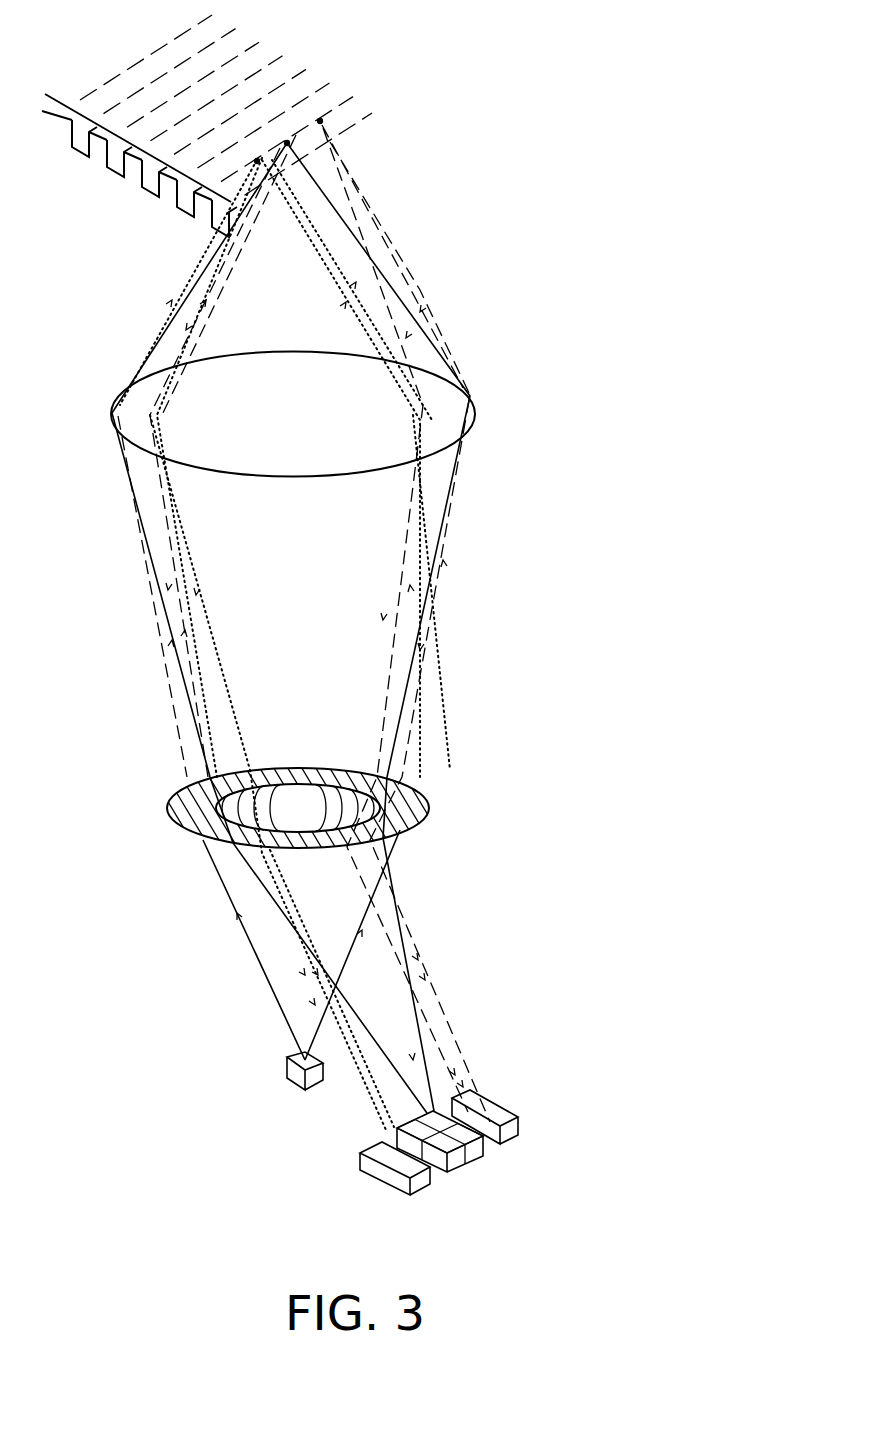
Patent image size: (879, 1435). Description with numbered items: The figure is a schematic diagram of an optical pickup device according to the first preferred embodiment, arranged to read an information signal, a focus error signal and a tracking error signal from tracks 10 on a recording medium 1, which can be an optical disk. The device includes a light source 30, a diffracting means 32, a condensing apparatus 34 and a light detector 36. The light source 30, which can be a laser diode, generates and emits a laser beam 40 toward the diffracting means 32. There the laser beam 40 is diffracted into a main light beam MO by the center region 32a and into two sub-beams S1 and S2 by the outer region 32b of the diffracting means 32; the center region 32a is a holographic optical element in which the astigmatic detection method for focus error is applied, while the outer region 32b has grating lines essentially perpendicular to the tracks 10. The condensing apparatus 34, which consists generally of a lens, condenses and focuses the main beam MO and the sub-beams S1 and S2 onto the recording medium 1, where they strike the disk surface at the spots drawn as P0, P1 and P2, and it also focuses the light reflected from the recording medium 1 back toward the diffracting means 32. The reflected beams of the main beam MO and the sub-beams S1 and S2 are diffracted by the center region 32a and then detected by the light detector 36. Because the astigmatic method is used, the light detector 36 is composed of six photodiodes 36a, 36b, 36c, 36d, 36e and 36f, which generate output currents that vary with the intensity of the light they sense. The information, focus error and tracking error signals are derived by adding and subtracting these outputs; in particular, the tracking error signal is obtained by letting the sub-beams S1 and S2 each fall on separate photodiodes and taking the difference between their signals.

The recording medium 1 is at (104, 163).
The tracks 10 is at (158, 175).
The main beam spot P0 is at (289, 140).
The first sub beam spot P1 is at (257, 160).
The second sub beam spot P2 is at (322, 119).
The main light beam MO is at (352, 258).
The sub-beam S1 is at (178, 306).
The sub-beam S2 is at (412, 290).
The condensing apparatus 34 is at (111, 413).
The diffracting means 32 is at (330, 802).
The center region 32a is at (287, 773).
The outer region 32b is at (428, 805).
The laser beam 40 is at (253, 953).
The light source 30 is at (287, 1075).
The light detector 36 is at (461, 1134).
The photodiode 36a is at (442, 1120).
The photodiode 36b is at (484, 1157).
The photodiode 36c is at (457, 1162).
The photodiode 36d is at (415, 1124).
The photodiode 36e is at (517, 1130).
The photodiode 36f is at (415, 1187).